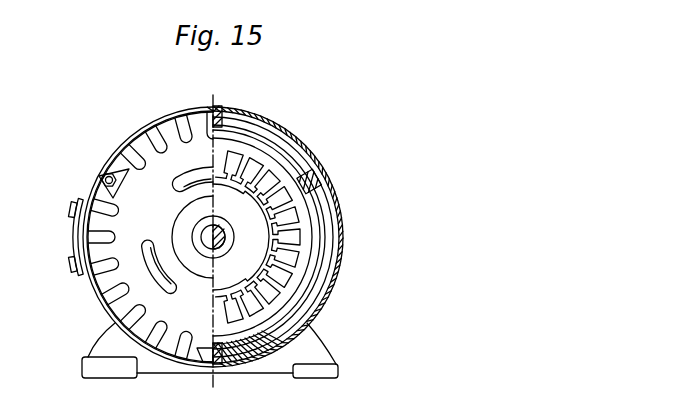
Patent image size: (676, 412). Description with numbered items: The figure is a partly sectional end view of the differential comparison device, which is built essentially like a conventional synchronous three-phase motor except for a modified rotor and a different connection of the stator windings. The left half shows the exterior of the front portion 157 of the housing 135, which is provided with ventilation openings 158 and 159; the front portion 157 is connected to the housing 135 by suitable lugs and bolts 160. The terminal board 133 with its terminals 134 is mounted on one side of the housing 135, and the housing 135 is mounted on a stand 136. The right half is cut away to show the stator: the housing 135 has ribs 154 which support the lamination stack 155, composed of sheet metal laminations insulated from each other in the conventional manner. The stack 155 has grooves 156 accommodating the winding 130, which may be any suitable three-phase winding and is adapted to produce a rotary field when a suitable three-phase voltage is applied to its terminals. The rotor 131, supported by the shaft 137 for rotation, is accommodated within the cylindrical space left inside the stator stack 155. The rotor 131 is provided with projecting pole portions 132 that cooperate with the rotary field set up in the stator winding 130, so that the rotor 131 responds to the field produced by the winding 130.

The winding 130 is at (264, 179).
The rotor 131 is at (255, 231).
The projecting pole portions 132 is at (226, 290).
The terminal board 133 is at (80, 196).
The terminals 134 is at (74, 262).
The housing 135 is at (267, 121).
The stand 136 is at (122, 348).
The shaft 137 is at (222, 239).
The ribs 154 is at (316, 184).
The lamination stack 155 is at (278, 303).
The grooves 156 is at (282, 280).
The front portion 157 is at (160, 177).
The ventilation openings 158 is at (183, 127).
The ventilation openings 159 is at (150, 272).
The lugs and bolts 160 is at (118, 168).